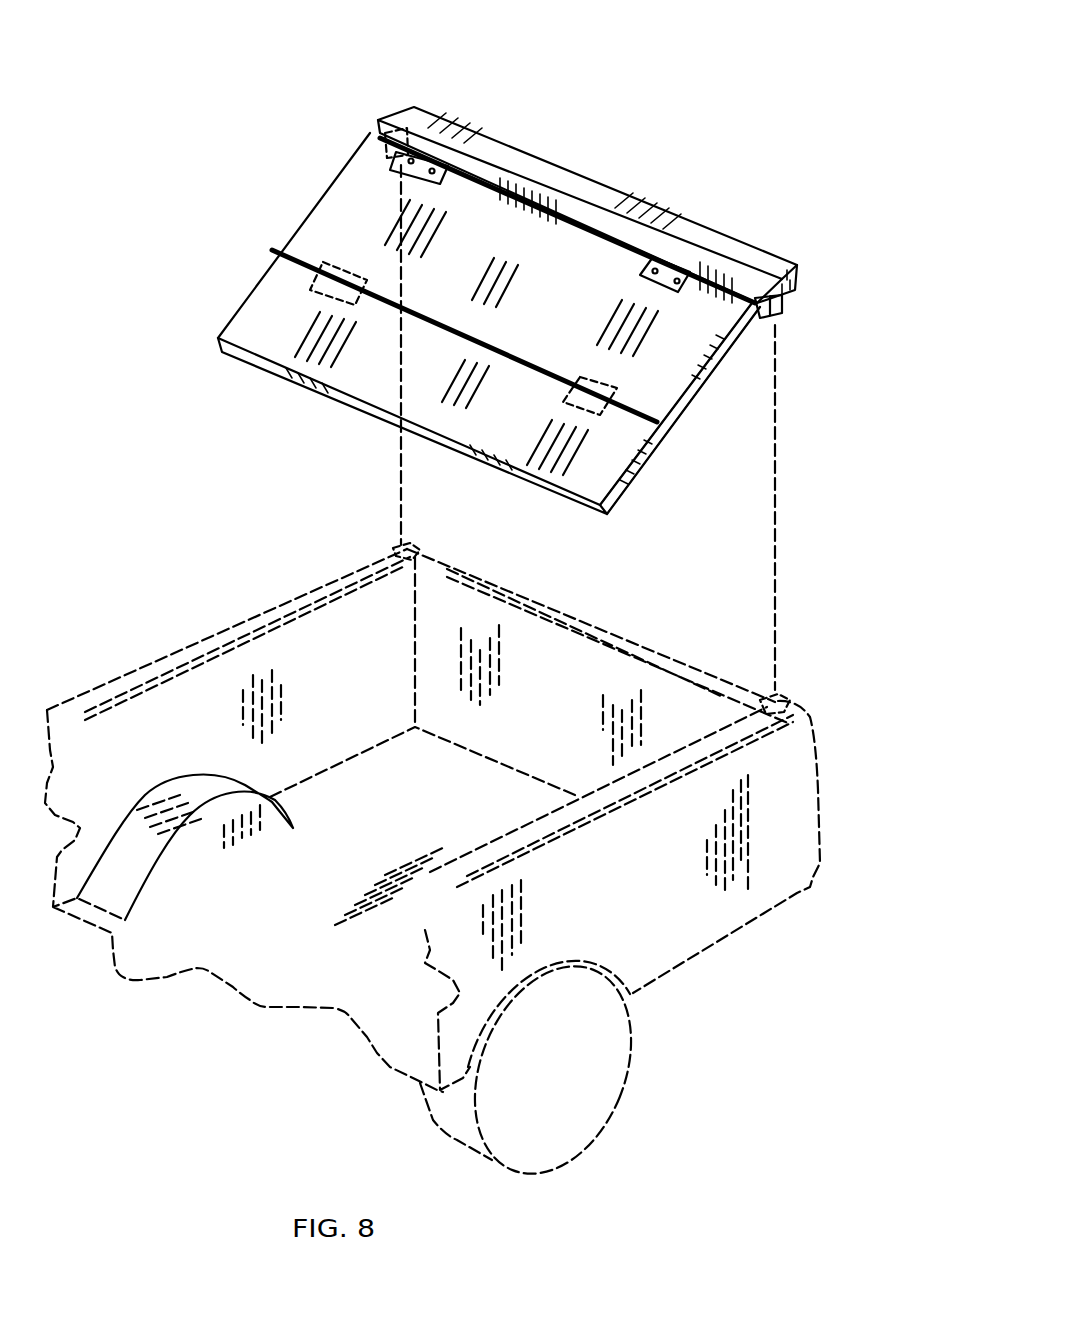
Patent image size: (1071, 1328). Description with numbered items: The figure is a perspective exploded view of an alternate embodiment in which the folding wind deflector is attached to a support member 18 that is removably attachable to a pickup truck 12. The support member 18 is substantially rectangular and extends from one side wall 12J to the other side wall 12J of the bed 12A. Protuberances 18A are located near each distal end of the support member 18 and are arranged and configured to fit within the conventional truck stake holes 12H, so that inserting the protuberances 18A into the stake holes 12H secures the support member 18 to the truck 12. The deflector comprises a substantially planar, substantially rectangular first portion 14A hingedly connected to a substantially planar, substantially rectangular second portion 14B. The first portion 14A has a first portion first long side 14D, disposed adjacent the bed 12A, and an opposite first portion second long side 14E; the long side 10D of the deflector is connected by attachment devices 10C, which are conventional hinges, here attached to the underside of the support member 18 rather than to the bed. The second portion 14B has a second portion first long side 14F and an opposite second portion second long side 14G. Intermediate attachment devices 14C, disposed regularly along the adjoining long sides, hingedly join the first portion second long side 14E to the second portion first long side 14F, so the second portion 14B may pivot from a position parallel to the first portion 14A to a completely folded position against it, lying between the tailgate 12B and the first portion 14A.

The attachment devices 10C is at (431, 150).
The first long side 10D is at (537, 192).
The pickup truck 12 is at (858, 803).
The bed 12A is at (275, 963).
The tailgate 12B is at (620, 637).
The stake holes 12H is at (393, 547).
The side walls 12J is at (173, 710).
The first portion 14A is at (567, 253).
The second portion 14B is at (273, 305).
The intermediate attachment devices 14C is at (297, 258).
The first portion first long side 14D is at (753, 307).
The first portion second long side 14E is at (670, 397).
The second portion first long side 14F is at (270, 268).
The second portion second long side 14G is at (260, 360).
The support member 18 is at (732, 262).
The protuberances 18A is at (380, 148).